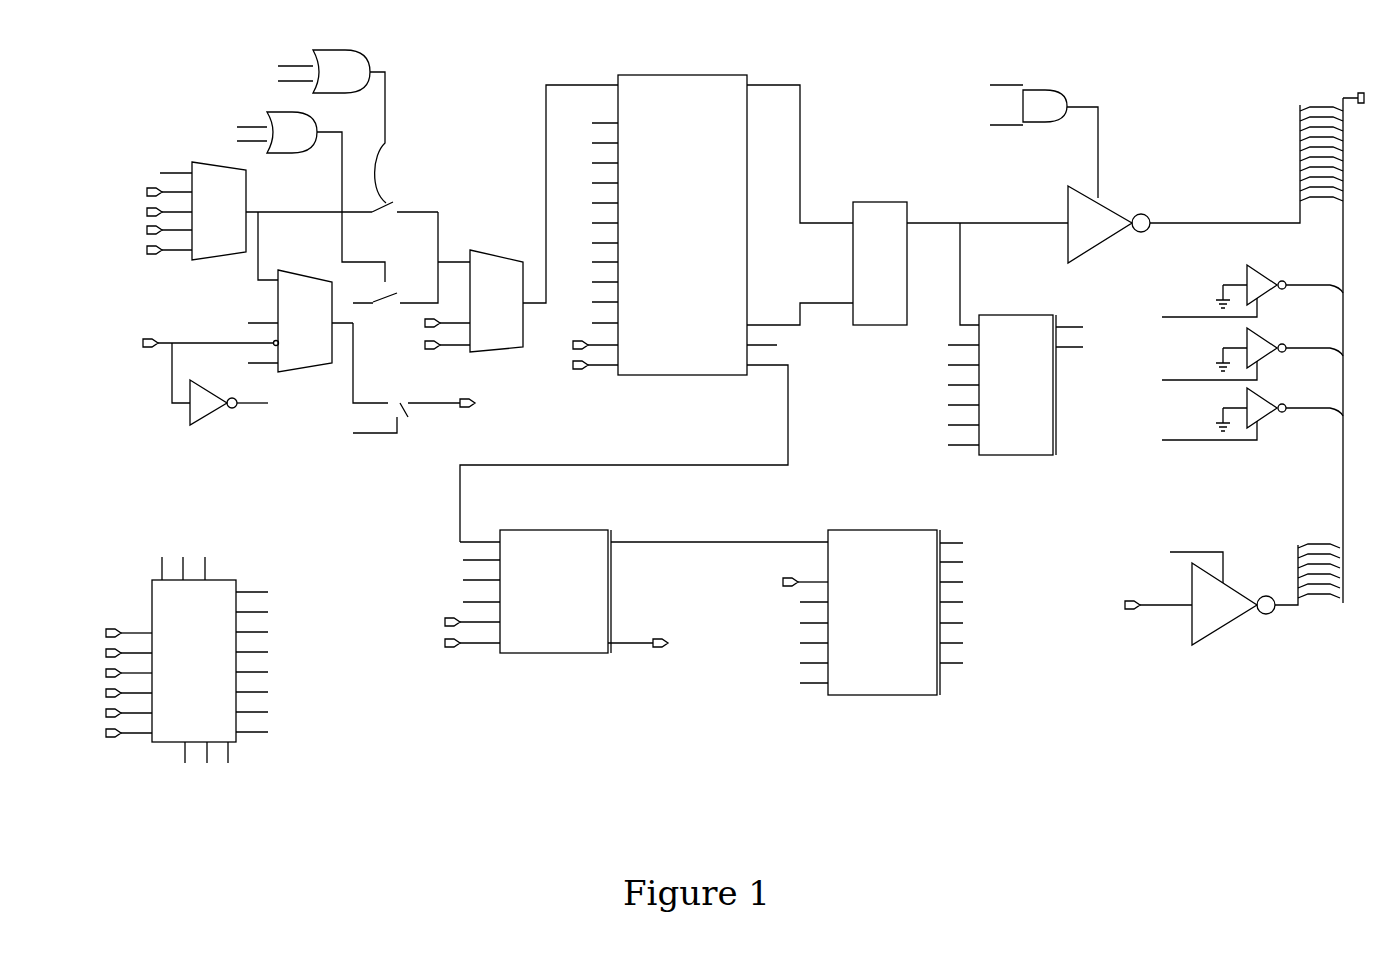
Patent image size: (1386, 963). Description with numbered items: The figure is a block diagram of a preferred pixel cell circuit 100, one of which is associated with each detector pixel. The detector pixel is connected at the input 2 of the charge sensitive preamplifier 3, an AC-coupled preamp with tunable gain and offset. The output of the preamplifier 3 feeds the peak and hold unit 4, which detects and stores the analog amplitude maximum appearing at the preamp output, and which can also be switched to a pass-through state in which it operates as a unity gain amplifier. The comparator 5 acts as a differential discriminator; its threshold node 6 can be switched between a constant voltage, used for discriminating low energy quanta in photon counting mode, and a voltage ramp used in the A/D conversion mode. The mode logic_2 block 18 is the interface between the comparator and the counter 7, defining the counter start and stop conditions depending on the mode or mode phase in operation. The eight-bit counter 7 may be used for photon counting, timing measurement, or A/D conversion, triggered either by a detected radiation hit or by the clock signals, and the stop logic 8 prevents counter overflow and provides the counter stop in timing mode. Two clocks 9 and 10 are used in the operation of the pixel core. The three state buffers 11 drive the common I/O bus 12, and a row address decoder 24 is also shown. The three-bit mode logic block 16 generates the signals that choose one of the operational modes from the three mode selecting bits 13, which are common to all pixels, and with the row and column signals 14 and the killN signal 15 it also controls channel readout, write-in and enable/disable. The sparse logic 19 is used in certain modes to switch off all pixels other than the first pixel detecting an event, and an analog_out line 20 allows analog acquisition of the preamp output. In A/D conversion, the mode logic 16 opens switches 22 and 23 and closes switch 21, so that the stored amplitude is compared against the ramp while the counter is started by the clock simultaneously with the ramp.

The input 2 is at (155, 173).
The charge sensitive preamplifier 3 is at (210, 180).
The peak and hold unit 4 is at (332, 288).
The comparator 5 is at (512, 277).
The threshold node 6 is at (435, 347).
The counter 7 is at (893, 210).
The stop logic 8 is at (1040, 433).
The clock 9 is at (785, 582).
The clock 10 is at (572, 365).
The three state buffers 11 is at (1223, 388).
The common I/O bus 12 is at (1307, 120).
The mode selecting bits 13 is at (85, 715).
The row and column signals 14 is at (110, 643).
The killN signal 15 is at (105, 675).
The mode logic block 16 is at (213, 577).
The mode logic_2 block 18 is at (672, 90).
The sparse logic 19 is at (562, 635).
The analog_out line 20 is at (460, 403).
The switch 21 is at (410, 277).
The switch 22 is at (348, 131).
The switch 23 is at (407, 423).
The row address decoder 24 is at (1195, 623).
The pixel cell circuit 100 is at (782, 785).